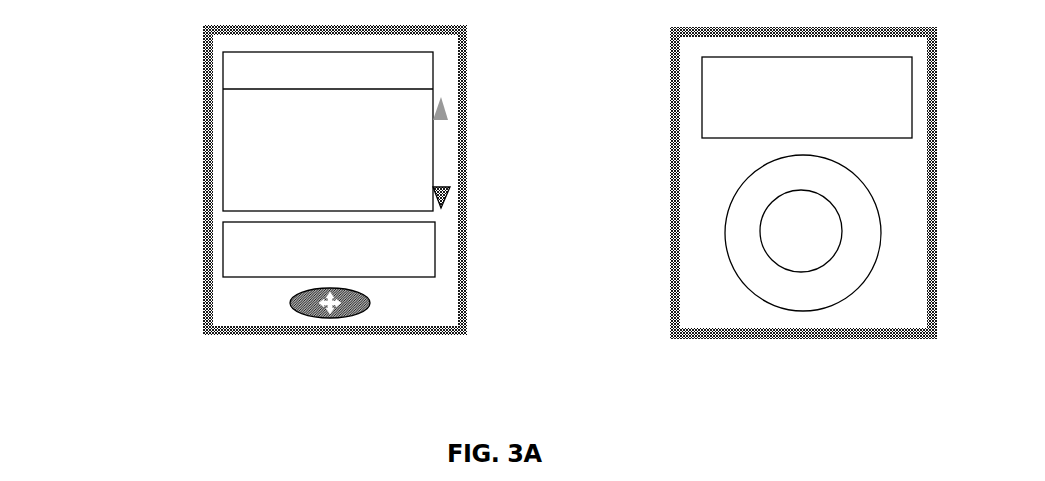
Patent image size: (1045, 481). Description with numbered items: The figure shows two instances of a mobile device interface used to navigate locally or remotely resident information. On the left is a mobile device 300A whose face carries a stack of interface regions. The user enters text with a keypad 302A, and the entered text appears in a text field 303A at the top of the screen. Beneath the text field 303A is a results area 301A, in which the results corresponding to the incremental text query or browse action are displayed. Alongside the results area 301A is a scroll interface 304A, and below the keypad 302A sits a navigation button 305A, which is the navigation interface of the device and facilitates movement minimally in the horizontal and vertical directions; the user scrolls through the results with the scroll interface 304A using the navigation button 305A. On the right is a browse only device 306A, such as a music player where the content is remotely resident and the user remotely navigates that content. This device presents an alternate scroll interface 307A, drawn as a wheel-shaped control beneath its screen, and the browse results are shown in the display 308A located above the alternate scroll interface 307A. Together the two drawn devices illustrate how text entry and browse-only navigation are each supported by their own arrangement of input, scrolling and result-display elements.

The mobile device 300A is at (203, 63).
The results area 301A is at (223, 175).
The keypad 302A is at (223, 262).
The text field 303A is at (433, 65).
The scroll interface 304A is at (442, 197).
The navigation button 305A is at (362, 311).
The browse only device 306A is at (820, 338).
The alternate scroll interface 307A is at (758, 292).
The display 308A is at (702, 107).